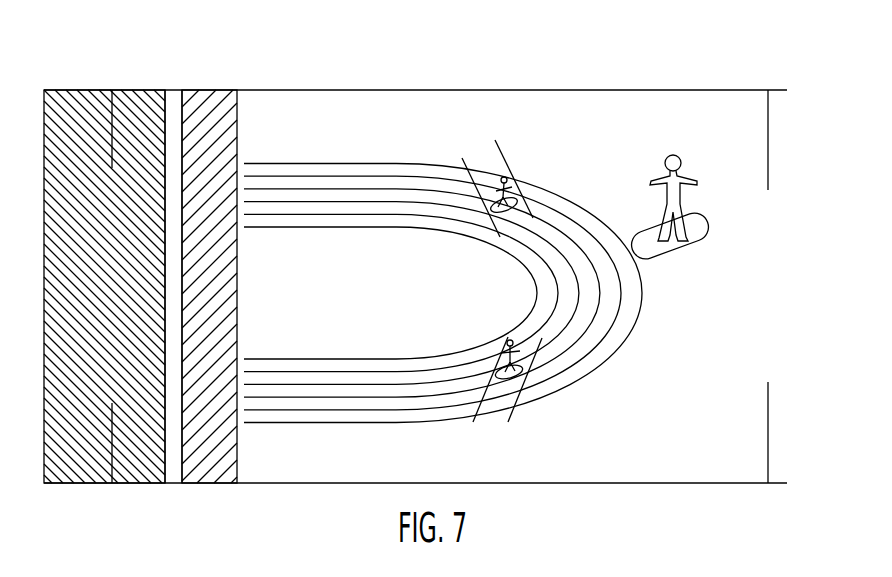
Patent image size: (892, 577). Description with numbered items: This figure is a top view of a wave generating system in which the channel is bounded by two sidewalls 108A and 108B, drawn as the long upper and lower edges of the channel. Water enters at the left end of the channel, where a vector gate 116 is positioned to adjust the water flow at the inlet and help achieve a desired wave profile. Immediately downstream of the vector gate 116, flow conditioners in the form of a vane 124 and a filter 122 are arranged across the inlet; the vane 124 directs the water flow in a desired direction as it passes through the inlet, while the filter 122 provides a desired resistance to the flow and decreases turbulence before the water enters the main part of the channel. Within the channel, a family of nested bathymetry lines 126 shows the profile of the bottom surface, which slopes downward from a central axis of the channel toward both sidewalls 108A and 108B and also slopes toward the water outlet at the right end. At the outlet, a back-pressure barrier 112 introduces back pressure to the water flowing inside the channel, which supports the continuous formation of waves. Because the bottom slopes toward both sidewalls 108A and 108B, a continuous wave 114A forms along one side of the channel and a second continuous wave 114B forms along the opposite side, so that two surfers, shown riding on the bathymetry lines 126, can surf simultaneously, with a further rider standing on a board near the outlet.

The sidewall 108A is at (630, 90).
The sidewall 108B is at (617, 484).
The back-pressure barrier 112 is at (768, 147).
The vector gate 116 is at (112, 122).
The vane 124 is at (173, 90).
The filter 122 is at (212, 90).
The bathymetry lines 126 is at (370, 163).
The continuous wave 114A is at (510, 173).
The continuous wave 114B is at (537, 360).